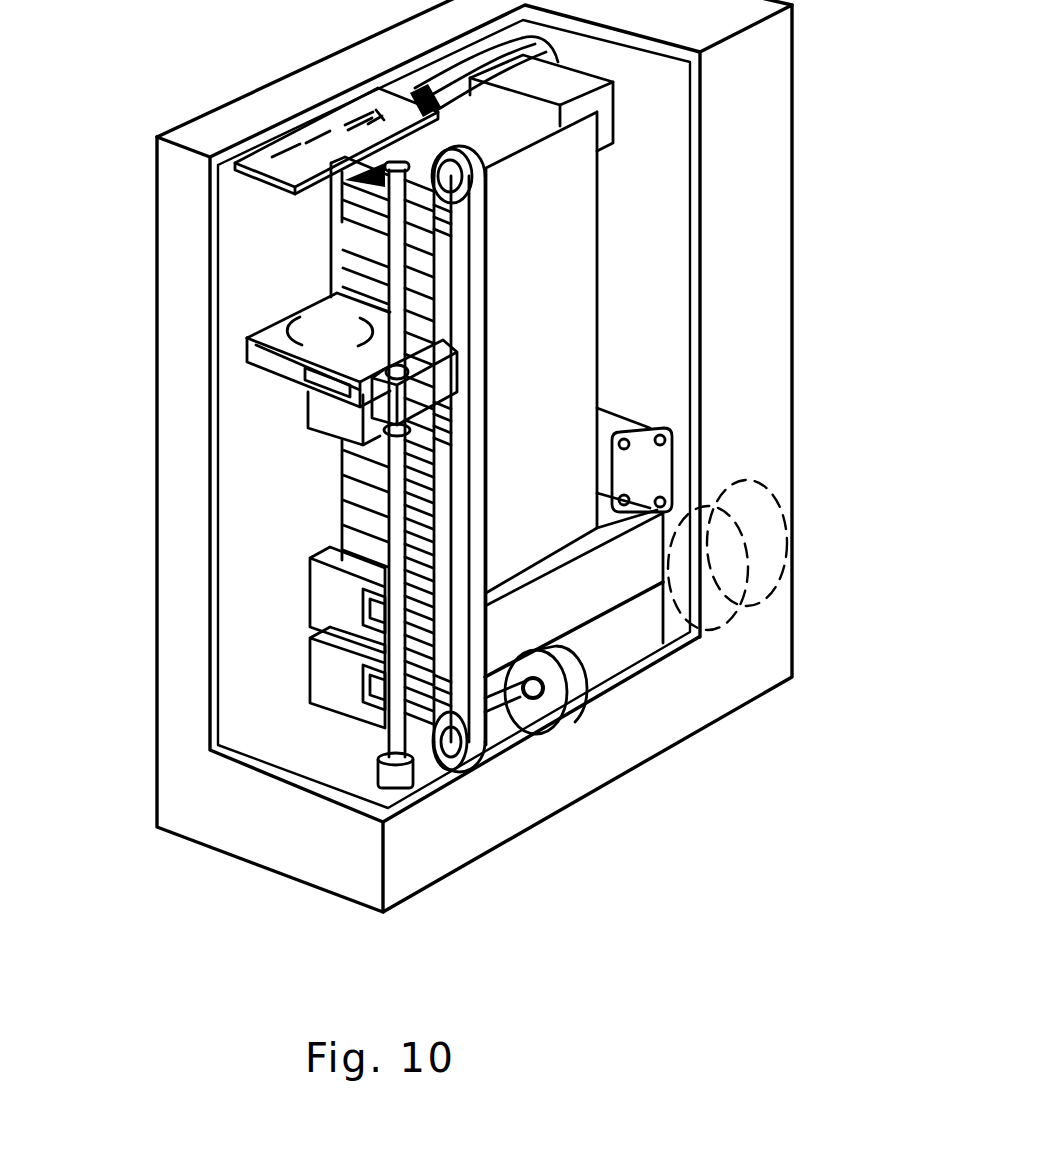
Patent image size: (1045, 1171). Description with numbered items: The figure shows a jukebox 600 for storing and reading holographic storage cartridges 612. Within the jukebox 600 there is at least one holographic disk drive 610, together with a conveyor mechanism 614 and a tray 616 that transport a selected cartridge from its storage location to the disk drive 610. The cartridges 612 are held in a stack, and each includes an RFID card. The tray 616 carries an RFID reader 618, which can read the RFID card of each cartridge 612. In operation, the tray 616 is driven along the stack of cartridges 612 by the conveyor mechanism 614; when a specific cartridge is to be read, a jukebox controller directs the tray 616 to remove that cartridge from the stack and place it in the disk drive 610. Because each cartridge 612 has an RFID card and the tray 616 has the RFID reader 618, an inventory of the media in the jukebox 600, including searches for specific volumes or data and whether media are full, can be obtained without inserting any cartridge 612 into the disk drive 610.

The jukebox 600 is at (280, 835).
The holographic disk drive 610 is at (515, 625).
The holographic storage cartridges 612 is at (357, 238).
The conveyor mechanism 614 is at (563, 291).
The tray 616 is at (277, 363).
The RFID reader 618 is at (302, 372).